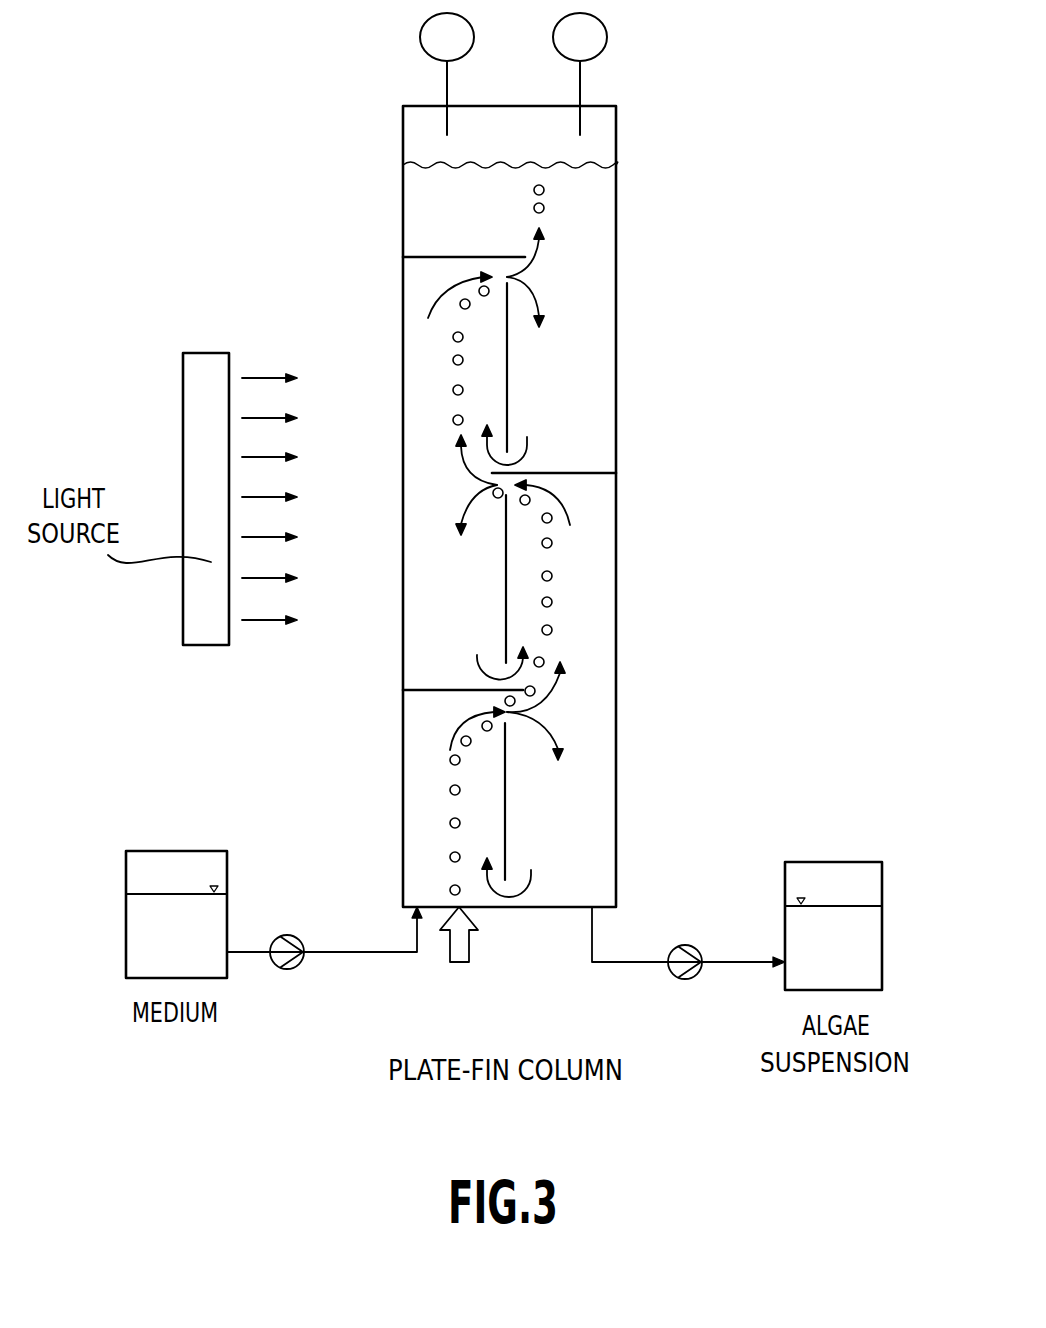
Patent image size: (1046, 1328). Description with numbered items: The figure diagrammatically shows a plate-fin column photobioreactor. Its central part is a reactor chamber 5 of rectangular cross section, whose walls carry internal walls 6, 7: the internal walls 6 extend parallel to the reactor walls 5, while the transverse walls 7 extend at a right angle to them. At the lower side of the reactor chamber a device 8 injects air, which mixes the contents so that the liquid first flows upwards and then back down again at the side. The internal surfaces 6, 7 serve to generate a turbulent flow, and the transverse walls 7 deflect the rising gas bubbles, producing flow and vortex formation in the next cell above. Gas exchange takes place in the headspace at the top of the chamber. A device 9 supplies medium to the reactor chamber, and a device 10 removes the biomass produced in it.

The reactor chamber 5 is at (616, 588).
The internal wall extending parallel to the reactor walls 6 is at (507, 377).
The transverse wall 7 is at (468, 257).
The device for injecting air at the lower side 8 is at (469, 939).
The device for supplying a medium 9 is at (368, 952).
The device for removing the biomass 10 is at (633, 962).